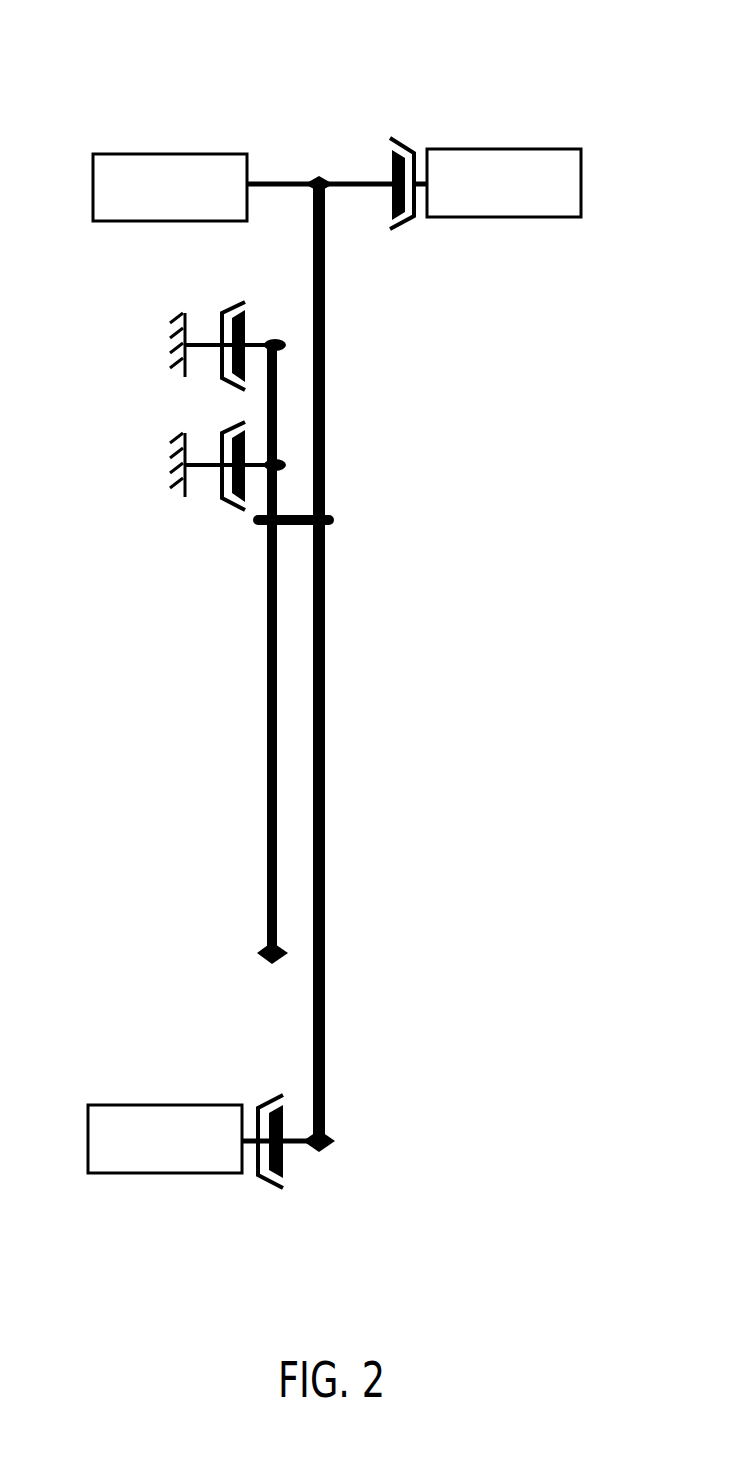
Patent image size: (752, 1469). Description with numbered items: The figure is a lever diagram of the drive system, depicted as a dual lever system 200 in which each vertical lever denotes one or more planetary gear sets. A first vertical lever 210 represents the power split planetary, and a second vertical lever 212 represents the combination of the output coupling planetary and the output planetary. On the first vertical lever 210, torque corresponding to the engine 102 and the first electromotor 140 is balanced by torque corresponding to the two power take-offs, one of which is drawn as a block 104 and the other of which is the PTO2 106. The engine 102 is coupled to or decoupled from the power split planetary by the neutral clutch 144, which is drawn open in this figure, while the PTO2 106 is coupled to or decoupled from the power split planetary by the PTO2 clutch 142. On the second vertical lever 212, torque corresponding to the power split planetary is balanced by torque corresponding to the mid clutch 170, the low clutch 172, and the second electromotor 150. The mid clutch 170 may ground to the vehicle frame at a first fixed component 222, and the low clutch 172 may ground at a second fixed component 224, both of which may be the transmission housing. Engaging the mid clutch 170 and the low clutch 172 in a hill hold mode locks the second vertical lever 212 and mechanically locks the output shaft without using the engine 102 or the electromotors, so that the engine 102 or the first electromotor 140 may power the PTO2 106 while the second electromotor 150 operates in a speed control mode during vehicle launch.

The dual lever system 200 is at (615, 55).
The engine 102 is at (483, 149).
The transmission output / component 104 is at (178, 154).
The PTO2 106 is at (153, 1105).
The first electromotor 140 is at (405, 1103).
The PTO2 clutch 142 is at (279, 1217).
The neutral clutch 144 is at (406, 122).
The second electromotor 150 is at (190, 923).
The mid clutch 170 is at (235, 282).
The low clutch 172 is at (236, 528).
The first vertical lever 210 is at (319, 690).
The second vertical lever 212 is at (272, 740).
The first fixed component 222 is at (150, 342).
The second fixed component 224 is at (150, 490).